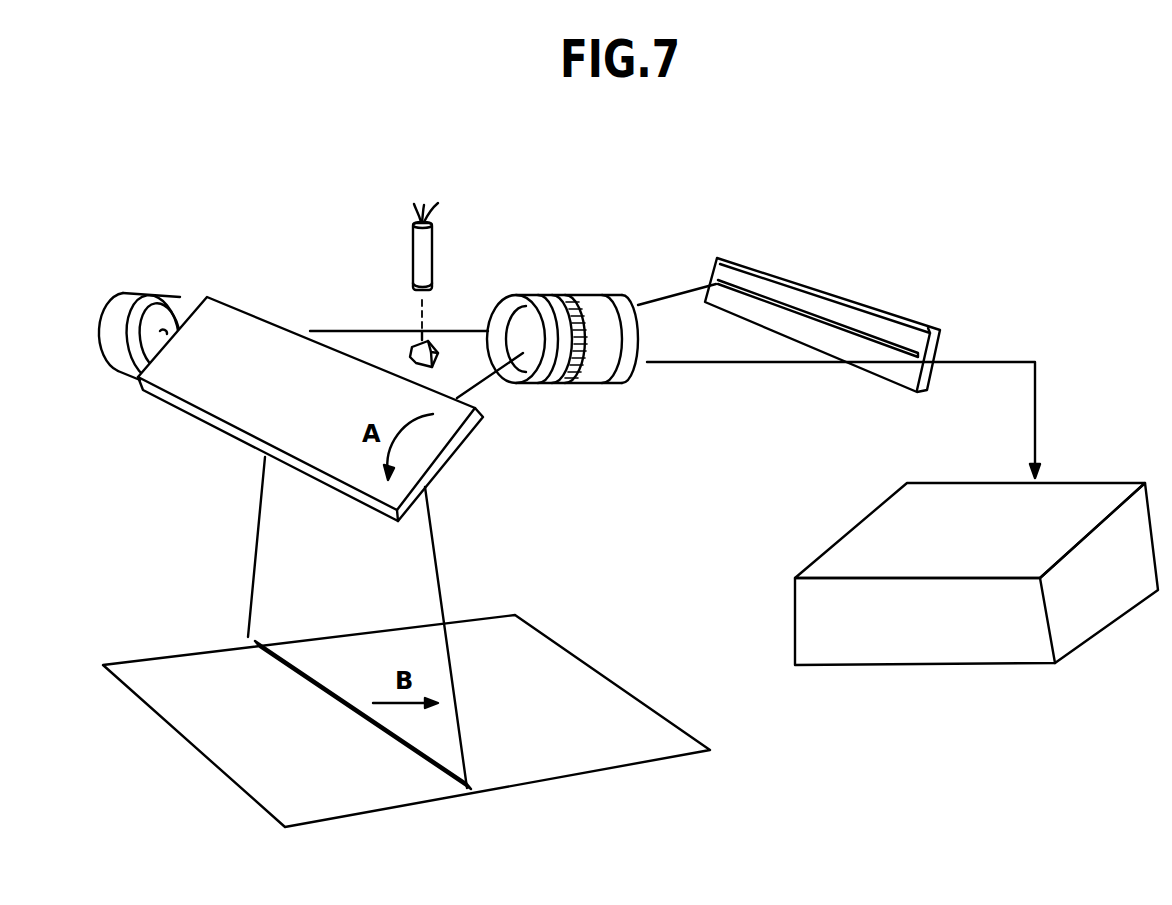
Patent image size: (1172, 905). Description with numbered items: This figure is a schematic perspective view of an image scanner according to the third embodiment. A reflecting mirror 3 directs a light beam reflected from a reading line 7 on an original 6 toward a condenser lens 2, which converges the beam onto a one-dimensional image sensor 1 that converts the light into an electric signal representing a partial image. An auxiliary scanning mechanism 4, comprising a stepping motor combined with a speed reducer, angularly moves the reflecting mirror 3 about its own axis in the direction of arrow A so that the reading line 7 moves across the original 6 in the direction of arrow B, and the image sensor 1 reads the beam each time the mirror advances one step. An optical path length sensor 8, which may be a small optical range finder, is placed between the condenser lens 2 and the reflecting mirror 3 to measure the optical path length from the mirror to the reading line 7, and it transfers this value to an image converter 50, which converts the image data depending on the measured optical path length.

The one-dimensional image sensor 1 is at (840, 300).
The condenser lens 2 is at (590, 293).
The reflecting mirror 3 is at (460, 439).
The auxiliary scanning mechanism 4 is at (132, 300).
The original 6 is at (588, 670).
The reading line 7 is at (468, 790).
The optical path length sensor 8 is at (433, 237).
The image converter 50 is at (838, 548).